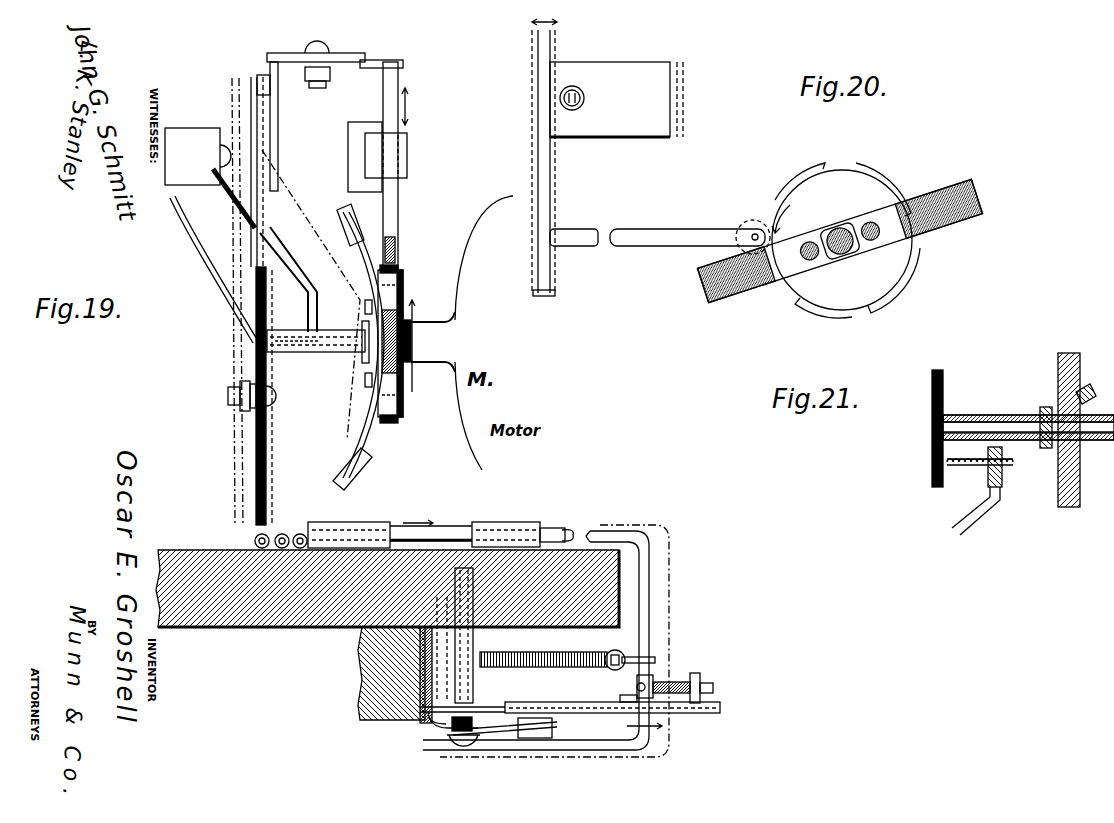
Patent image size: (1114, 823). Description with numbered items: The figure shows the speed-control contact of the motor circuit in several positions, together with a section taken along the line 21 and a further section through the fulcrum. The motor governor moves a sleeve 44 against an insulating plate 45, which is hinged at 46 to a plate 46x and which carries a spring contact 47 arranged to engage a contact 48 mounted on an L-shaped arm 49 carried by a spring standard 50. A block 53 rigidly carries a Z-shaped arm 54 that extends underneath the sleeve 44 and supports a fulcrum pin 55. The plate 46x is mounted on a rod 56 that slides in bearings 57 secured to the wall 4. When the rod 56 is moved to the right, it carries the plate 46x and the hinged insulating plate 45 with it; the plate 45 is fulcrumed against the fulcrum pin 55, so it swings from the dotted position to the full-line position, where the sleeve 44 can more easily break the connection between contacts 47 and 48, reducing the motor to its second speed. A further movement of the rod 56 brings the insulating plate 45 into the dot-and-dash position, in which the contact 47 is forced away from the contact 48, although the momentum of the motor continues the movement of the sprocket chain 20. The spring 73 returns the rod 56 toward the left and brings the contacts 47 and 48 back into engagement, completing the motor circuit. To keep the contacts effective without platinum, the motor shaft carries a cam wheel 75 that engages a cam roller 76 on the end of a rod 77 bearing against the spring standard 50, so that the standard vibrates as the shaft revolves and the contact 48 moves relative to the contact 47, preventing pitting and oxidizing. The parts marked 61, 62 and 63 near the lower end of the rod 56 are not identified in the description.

In FIG. 19, the wall 4 is at (172, 557).
In FIG. 19, the sprocket chain 20 is at (243, 72).
In FIG. 19, the pin 21 is at (255, 373).
In FIG. 19, the sleeve 44 is at (343, 327).
In FIG. 21, the sleeve 44 is at (980, 416).
In FIG. 19, the insulating plate 45 is at (268, 432).
In FIG. 21, the insulating plate 45 is at (945, 383).
In FIG. 19, the hinge 46 is at (285, 535).
In FIG. 19, the plate 46x is at (343, 546).
In FIG. 19, the spring contact 47 is at (252, 200).
In FIG. 19, the contact 48 is at (271, 86).
In FIG. 20, the contact 48 is at (575, 93).
In FIG. 19, the L-shaped arm 49 is at (384, 58).
In FIG. 20, the L-shaped arm 49 is at (623, 67).
In FIG. 20, the spring standard 50 is at (539, 185).
In FIG. 19, the block 53 is at (193, 136).
In FIG. 19, the Z-shaped arm 54 is at (242, 214).
In FIG. 21, the Z-shaped arm 54 is at (986, 470).
In FIG. 19, the fulcrum pin 55 is at (287, 336).
In FIG. 21, the fulcrum pin 55 is at (1013, 464).
In FIG. 19, the rod 56 is at (441, 530).
In FIG. 19, the bearings 57 is at (525, 518).
In FIG. 19, the roller 61 is at (470, 747).
In FIG. 19, the bracket 62 is at (453, 729).
In FIG. 19, the lever 63 is at (540, 738).
In FIG. 19, the spring 73 is at (555, 635).
In FIG. 19, the cam wheel 75 is at (393, 400).
In FIG. 20, the cam wheel 75 is at (828, 181).
In FIG. 21, the cam wheel 75 is at (1079, 479).
In FIG. 19, the cam roller 76 is at (396, 256).
In FIG. 20, the cam roller 76 is at (752, 222).
In FIG. 19, the rod 77 is at (392, 218).
In FIG. 20, the rod 77 is at (672, 224).